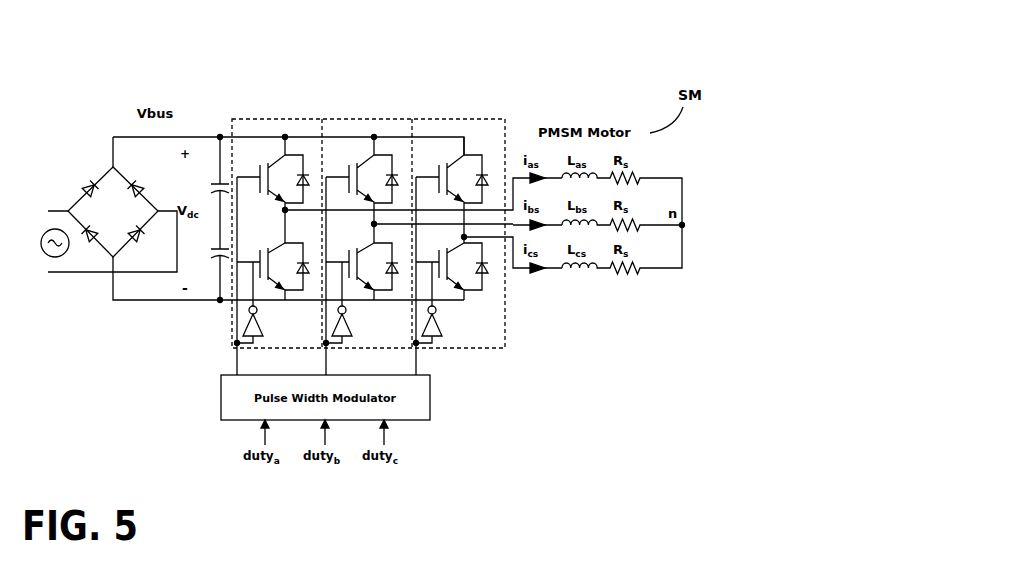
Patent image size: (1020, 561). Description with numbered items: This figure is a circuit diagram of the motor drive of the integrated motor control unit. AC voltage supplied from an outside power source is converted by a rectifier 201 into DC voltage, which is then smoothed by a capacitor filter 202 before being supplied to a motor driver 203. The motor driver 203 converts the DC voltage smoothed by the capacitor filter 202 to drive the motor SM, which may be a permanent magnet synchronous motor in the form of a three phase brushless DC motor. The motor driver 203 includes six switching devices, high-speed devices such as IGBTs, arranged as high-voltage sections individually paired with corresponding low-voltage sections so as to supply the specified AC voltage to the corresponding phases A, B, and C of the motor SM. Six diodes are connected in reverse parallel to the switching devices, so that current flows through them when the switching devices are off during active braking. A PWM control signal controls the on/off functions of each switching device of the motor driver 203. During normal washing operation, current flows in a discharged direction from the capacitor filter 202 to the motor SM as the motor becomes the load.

The rectifier 201 is at (99, 256).
The capacitor filter 202 is at (215, 258).
The motor driver 203 is at (483, 356).